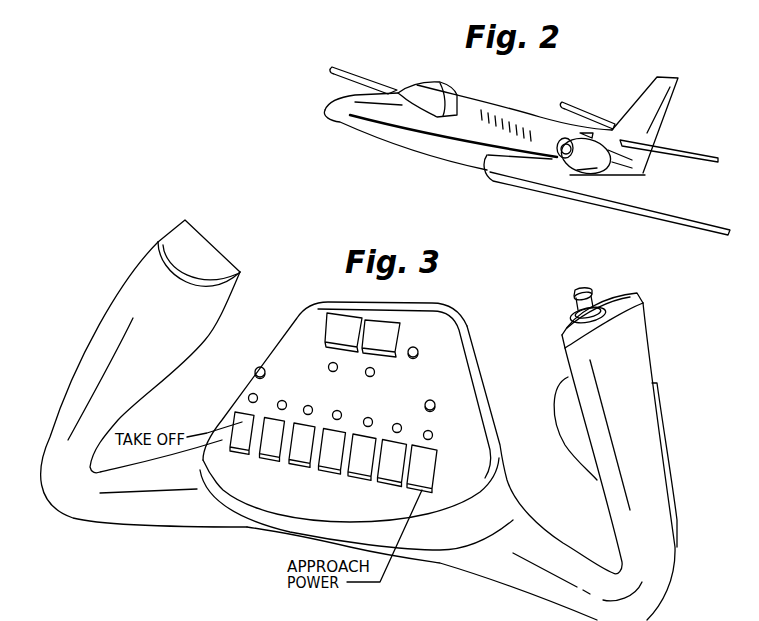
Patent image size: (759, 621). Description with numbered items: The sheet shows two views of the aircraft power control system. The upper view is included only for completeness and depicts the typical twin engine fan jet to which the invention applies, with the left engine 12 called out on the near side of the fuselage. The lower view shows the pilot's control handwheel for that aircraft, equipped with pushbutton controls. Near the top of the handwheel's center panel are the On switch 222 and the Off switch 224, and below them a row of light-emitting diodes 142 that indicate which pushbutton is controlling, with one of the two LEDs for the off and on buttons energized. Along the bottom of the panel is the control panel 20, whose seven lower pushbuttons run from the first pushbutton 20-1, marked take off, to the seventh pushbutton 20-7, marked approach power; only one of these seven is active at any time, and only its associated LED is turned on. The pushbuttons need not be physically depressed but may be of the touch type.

In FIG. 2, the left engine 12 is at (630, 172).
In FIG. 3, the On switch 222 is at (343, 320).
In FIG. 3, the Off switch 224 is at (398, 328).
In FIG. 3, the light-emitting diodes 142 is at (424, 433).
In FIG. 3, the control panel 20 is at (395, 460).
In FIG. 3, the pushbutton 20-1 is at (233, 453).
In FIG. 3, the pushbutton 20-7 is at (440, 462).